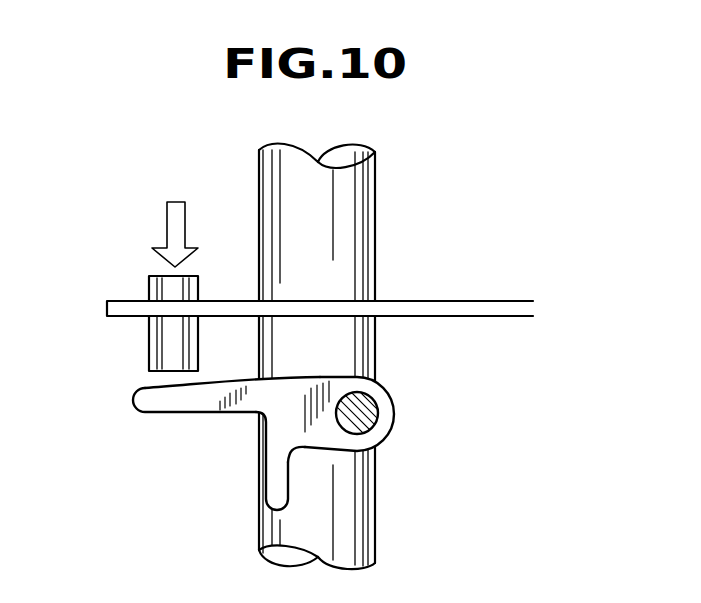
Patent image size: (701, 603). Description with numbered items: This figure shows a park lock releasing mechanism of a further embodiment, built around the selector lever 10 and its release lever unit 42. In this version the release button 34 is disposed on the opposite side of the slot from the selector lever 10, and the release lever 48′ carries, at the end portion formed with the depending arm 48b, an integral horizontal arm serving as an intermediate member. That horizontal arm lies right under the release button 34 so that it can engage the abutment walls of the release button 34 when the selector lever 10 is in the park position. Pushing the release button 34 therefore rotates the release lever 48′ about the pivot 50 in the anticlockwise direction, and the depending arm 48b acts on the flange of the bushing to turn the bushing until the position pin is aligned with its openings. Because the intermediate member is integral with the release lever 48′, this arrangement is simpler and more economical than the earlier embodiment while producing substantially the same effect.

The selector lever 10 is at (372, 213).
The release button 34 is at (151, 342).
The release lever unit 42 is at (341, 446).
The depending arm 48b is at (282, 496).
The release lever 48′ is at (384, 451).
The pivot 50 is at (367, 412).